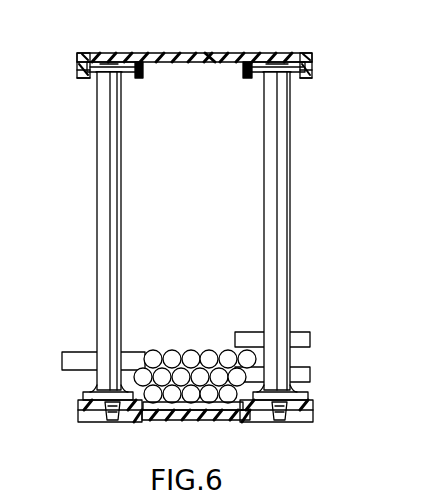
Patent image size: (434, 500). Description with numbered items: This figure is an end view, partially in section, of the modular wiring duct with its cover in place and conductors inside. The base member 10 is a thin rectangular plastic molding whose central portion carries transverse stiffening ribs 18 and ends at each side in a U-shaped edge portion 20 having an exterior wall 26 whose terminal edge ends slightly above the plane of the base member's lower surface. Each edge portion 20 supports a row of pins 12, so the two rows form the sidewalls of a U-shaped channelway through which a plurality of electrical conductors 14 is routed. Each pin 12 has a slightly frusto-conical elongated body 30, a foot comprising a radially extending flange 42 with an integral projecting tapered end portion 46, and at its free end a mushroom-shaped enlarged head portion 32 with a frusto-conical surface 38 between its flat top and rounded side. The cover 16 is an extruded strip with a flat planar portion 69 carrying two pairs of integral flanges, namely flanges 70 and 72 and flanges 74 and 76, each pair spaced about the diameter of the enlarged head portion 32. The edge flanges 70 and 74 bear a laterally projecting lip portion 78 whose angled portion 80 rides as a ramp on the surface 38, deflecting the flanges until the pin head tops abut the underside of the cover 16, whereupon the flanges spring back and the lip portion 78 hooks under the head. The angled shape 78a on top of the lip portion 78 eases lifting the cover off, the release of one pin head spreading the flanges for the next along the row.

The base member 10 is at (190, 418).
The pins 12 is at (262, 176).
The electrical conductors 14 is at (152, 350).
The cover 16 is at (172, 52).
The stiffening ribs 18 is at (230, 410).
The edge portions 20 is at (96, 418).
The exterior wall 26 is at (314, 420).
The elongated body 30 is at (110, 250).
The enlarged head portion 32 is at (130, 72).
The frusto-conical surface 38 is at (86, 55).
The radially extending flange 42 is at (302, 382).
The tapered end portion 46 is at (114, 422).
The flat planar portion 69 is at (216, 54).
The flange 70 is at (77, 70).
The flange 72 is at (143, 72).
The flange 74 is at (305, 72).
The flange 76 is at (246, 78).
The lip portion 78 is at (100, 78).
The angled shape 78a is at (90, 72).
The angled portion 80 is at (86, 78).